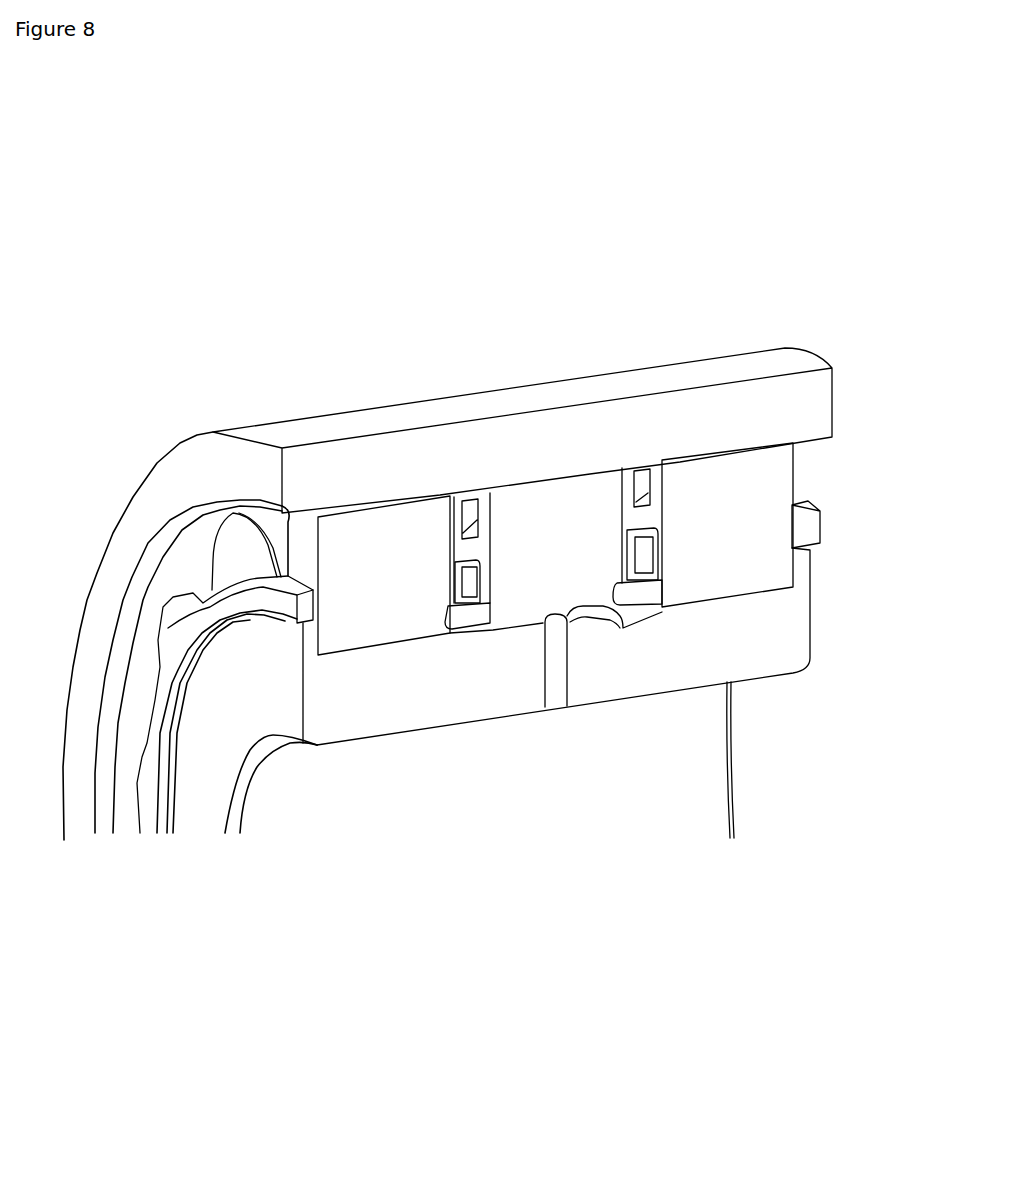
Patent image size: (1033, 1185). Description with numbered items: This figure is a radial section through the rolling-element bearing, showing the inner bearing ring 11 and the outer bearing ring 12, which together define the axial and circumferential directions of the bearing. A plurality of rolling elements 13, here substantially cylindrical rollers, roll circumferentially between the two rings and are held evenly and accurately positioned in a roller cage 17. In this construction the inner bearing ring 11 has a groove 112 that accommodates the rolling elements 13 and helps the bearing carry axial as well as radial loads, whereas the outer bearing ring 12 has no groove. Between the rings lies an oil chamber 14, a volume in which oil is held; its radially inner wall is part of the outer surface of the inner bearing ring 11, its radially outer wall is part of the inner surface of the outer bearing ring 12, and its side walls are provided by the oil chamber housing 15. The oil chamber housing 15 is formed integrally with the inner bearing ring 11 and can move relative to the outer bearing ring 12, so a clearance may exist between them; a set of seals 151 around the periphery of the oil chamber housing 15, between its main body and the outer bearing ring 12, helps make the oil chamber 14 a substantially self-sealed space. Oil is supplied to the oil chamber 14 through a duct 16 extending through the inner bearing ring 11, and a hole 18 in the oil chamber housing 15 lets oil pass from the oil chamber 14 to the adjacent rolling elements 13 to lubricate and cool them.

The inner bearing ring 11 is at (447, 698).
The outer bearing ring 12 is at (407, 453).
The rolling elements 13 is at (228, 547).
The oil chamber 14 is at (553, 523).
The oil chamber housing 15 is at (628, 527).
The seals 151 is at (641, 482).
The duct 16 is at (557, 684).
The roller cage 17 is at (462, 583).
The hole 18 is at (485, 620).
The groove 112 is at (728, 600).